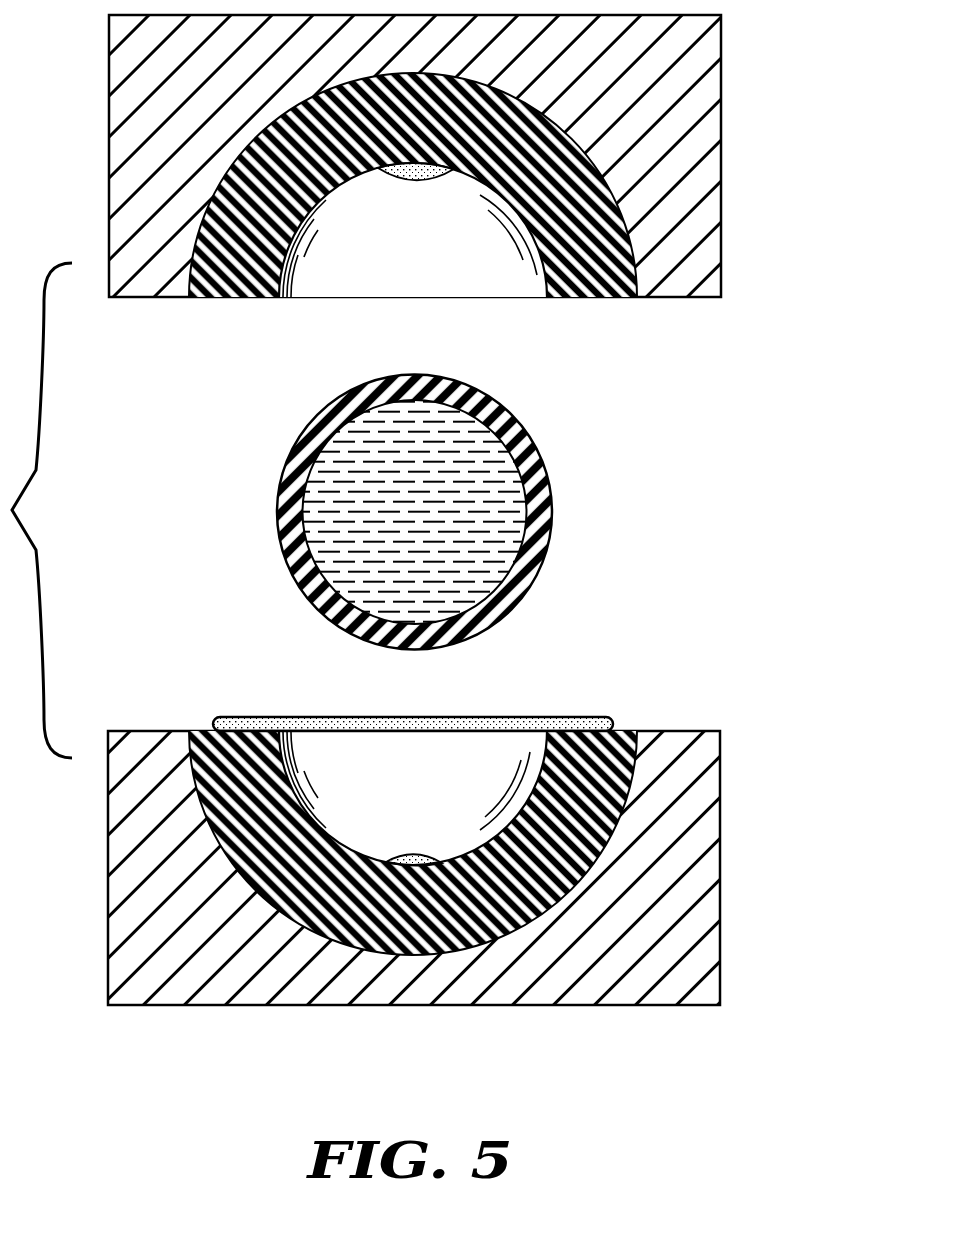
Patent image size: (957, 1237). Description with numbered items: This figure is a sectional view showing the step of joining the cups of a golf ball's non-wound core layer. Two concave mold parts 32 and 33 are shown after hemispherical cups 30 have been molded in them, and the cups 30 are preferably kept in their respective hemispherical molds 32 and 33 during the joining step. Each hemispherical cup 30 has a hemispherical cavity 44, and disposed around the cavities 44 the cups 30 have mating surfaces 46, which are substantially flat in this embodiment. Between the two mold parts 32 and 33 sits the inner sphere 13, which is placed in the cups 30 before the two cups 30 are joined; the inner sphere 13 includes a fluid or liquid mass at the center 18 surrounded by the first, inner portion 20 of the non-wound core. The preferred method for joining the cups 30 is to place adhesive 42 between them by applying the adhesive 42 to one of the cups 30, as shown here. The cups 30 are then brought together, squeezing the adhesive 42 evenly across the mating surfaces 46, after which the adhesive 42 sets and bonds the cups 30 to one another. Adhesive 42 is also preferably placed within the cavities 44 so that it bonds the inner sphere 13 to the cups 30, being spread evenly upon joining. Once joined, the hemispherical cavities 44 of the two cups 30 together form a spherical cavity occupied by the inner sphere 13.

The inner sphere 13 is at (270, 497).
The fluid or liquid mass at the center 18 is at (508, 492).
The first, inner portion 20 is at (540, 575).
The cup 30 is at (618, 297).
The concave mold part 32 is at (703, 168).
The concave mold part 33 is at (722, 803).
The adhesive 42 is at (435, 182).
The hemispherical cavity 44 is at (347, 254).
The mating surface 46 is at (229, 299).